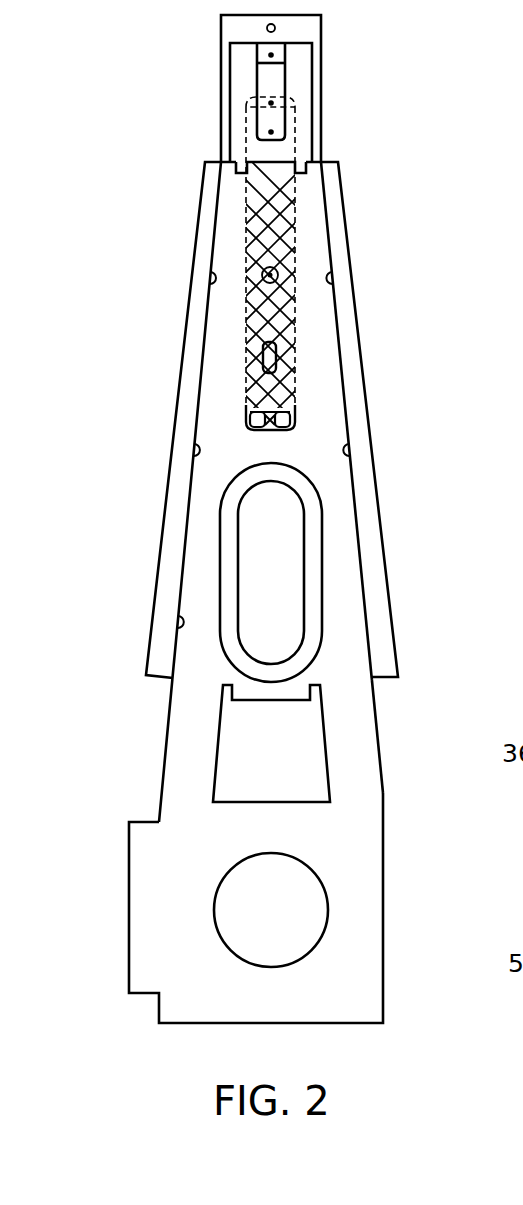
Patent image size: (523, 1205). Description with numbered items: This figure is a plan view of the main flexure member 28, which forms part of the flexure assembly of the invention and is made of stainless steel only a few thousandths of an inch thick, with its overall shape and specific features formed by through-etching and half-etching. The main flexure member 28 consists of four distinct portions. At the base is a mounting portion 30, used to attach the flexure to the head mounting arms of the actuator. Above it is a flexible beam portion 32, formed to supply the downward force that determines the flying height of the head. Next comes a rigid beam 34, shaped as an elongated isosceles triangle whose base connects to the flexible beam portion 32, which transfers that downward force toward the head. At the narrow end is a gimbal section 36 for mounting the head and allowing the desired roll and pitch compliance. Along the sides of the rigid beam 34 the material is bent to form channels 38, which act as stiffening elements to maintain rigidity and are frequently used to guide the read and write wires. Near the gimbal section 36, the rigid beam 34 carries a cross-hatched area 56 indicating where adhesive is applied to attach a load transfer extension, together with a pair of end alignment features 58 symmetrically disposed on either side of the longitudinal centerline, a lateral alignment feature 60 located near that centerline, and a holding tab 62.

The main flexure member 28 is at (100, 333).
The mounting portion 30 is at (122, 825).
The flexible beam portion 32 is at (120, 683).
The rigid beam 34 is at (130, 162).
The gimbal section 36 is at (192, 15).
The channels 38 is at (203, 228).
The cross-hatched area 56 is at (293, 165).
The end alignment features 58 is at (245, 177).
The lateral alignment feature 60 is at (277, 343).
The holding tab 62 is at (295, 415).